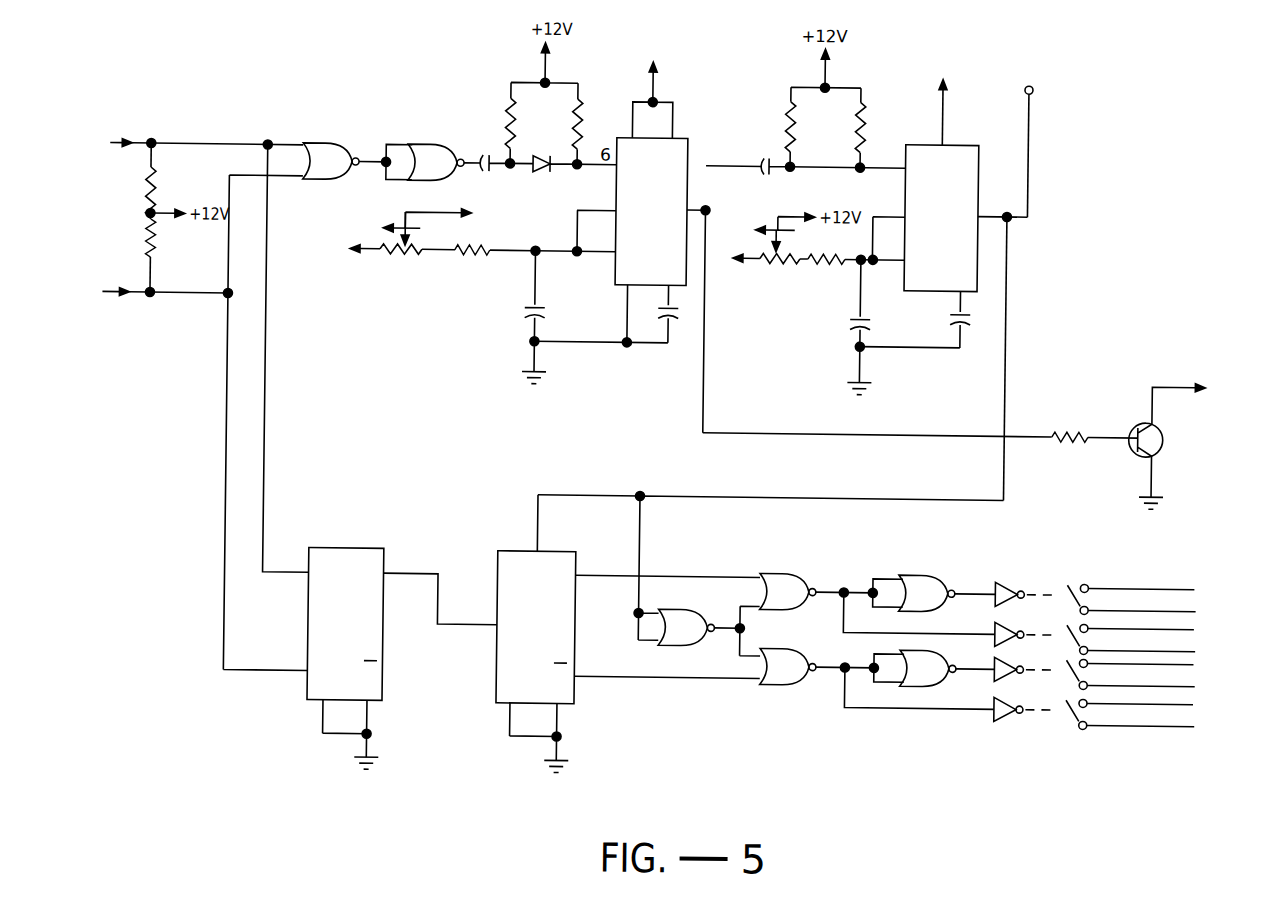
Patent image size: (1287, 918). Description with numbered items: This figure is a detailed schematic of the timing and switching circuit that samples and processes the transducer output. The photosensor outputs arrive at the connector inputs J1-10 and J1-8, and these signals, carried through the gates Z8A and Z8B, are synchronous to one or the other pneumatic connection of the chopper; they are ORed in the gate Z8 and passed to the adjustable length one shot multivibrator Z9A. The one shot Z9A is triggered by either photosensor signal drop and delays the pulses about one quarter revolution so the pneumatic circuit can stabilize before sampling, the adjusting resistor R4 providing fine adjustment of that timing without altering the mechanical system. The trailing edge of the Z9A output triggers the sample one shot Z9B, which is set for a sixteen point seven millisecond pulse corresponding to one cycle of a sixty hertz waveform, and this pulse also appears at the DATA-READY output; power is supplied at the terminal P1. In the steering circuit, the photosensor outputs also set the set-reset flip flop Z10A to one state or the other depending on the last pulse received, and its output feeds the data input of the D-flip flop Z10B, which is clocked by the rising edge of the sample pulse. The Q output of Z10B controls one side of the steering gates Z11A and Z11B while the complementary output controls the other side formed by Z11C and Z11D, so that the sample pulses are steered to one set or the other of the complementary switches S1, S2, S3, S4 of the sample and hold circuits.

The connector J1 pin 10 input J1-10 is at (176, 144).
The connector J1 pin 8 input J1-8 is at (141, 291).
The photosensor signal gate Z8A is at (351, 147).
The photosensor signal gate Z8B is at (456, 129).
The adjustable length one shot multivibrator Z9A is at (664, 216).
The sample one shot multivibrator Z9B is at (955, 224).
The adjusting resistor R4 is at (443, 239).
The +P1 supply terminal P1 is at (1026, 139).
The data ready output transistor DATA-READY is at (1194, 443).
The set-reset flip flop Z10A is at (380, 552).
The D-flip flop Z10B is at (498, 564).
The OR gate Z8 is at (679, 610).
The steering circuit gate Z11A is at (792, 576).
The steering circuit gate Z11B is at (929, 577).
The steering circuit gate Z11C is at (784, 653).
The steering circuit gate Z11D is at (937, 658).
The complementary switch S1 is at (1046, 578).
The complementary switch S2 is at (1046, 618).
The complementary switch S3 is at (1046, 653).
The complementary switch S4 is at (1046, 693).